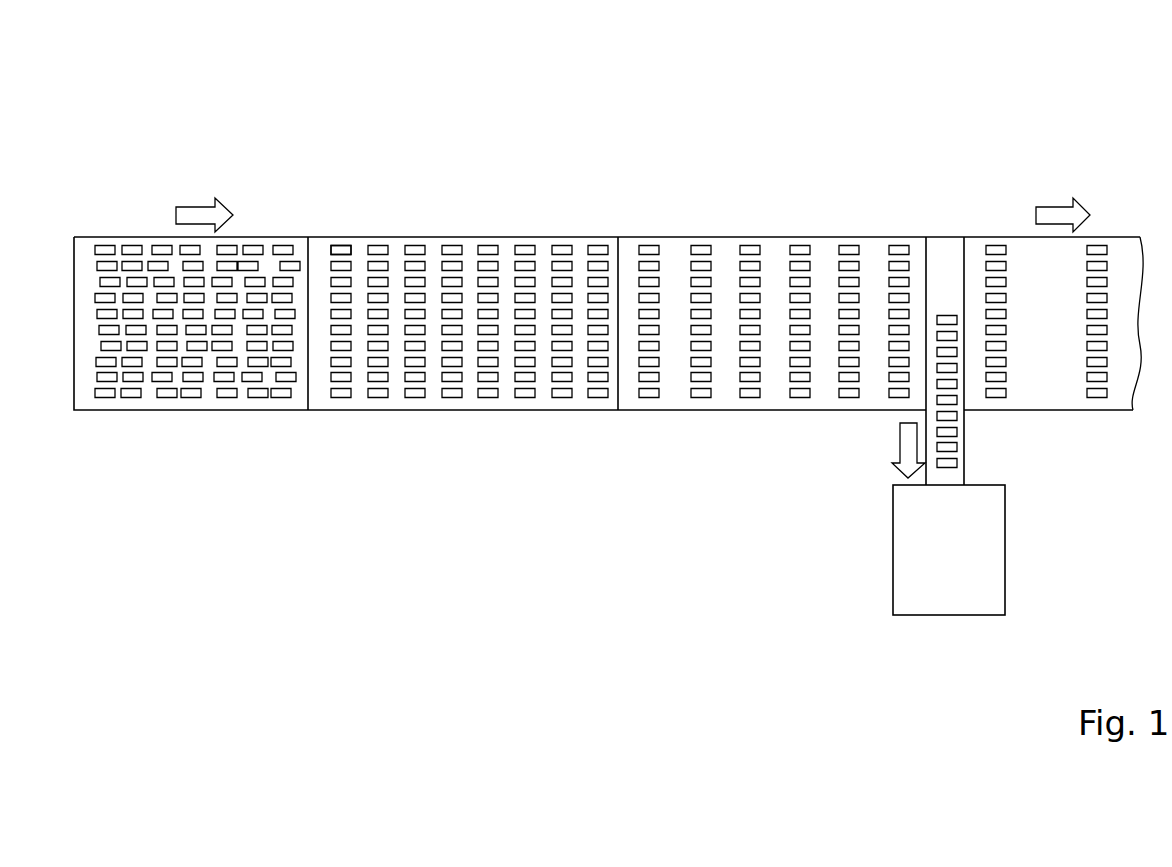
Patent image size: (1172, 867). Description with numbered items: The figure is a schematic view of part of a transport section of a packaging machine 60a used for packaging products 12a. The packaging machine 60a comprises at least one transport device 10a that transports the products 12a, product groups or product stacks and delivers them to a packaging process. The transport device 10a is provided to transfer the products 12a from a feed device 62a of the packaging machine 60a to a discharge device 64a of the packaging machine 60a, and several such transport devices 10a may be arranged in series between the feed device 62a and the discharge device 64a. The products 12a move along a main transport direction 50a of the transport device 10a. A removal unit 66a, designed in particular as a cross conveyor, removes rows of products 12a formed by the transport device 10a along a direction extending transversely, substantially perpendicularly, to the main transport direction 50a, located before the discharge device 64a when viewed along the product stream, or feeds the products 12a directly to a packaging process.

The transport device 10a is at (578, 213).
The product 12a is at (343, 247).
The main transport direction 50a is at (192, 216).
The packaging machine 60a is at (1044, 138).
The feed device 62a is at (136, 437).
The discharge device 64a is at (1138, 211).
The removal unit 66a is at (868, 559).